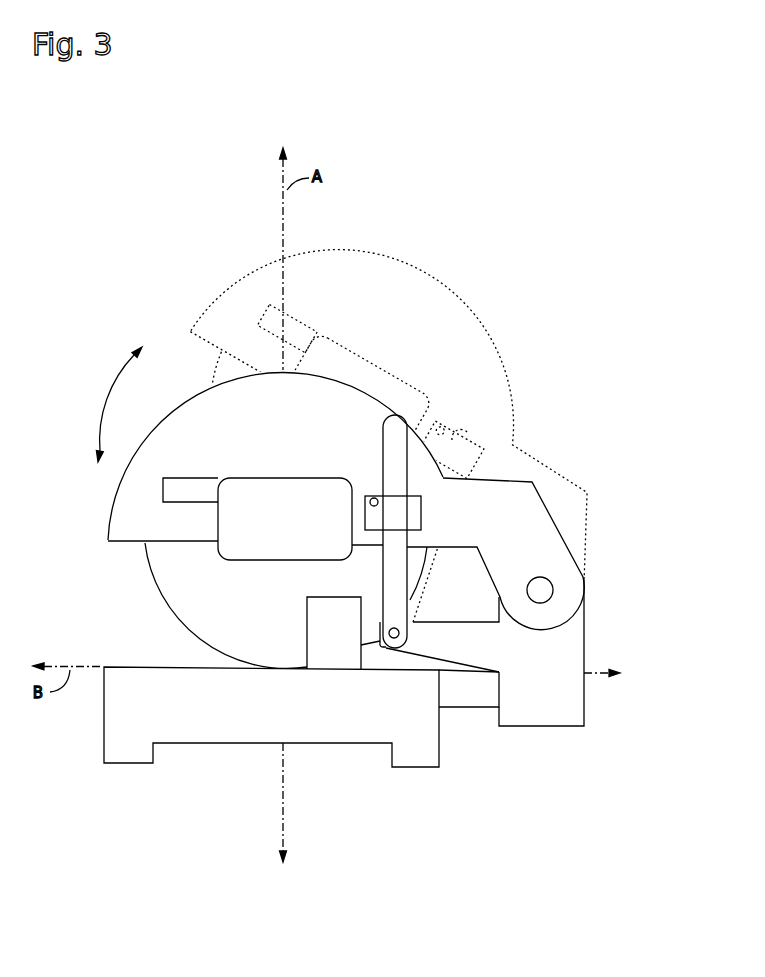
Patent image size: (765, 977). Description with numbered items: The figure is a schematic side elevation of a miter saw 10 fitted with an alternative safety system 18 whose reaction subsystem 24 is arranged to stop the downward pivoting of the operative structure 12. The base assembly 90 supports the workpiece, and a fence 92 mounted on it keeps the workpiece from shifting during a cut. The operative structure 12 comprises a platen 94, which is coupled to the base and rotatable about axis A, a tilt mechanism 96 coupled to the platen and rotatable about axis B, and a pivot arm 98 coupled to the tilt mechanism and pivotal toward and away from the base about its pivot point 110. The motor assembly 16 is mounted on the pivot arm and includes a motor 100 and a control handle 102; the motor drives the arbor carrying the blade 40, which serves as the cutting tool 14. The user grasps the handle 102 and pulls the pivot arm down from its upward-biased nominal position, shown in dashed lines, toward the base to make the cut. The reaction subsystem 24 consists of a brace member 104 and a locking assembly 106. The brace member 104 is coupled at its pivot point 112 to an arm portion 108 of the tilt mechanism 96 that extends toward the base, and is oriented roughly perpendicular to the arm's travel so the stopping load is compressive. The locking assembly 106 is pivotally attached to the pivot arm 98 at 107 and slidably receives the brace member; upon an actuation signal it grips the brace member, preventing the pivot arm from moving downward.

The miter saw 10 is at (525, 231).
The operative structure 12 is at (140, 278).
The cutting tool 14 is at (105, 603).
The motor assembly 16 is at (218, 442).
The safety system 18 is at (575, 435).
The reaction subsystem 24 is at (357, 465).
The blade 40 is at (187, 617).
The base assembly 90 is at (100, 777).
The fence 92 is at (337, 655).
The platen 94 is at (458, 698).
The tilt mechanism 96 is at (575, 645).
The pivot arm 98 is at (575, 582).
The motor 100 is at (240, 552).
The control handle 102 is at (188, 494).
The brace member 104 is at (390, 603).
The locking assembly 106 is at (415, 513).
The pivotal coupling of locking assembly 107 is at (369, 505).
The arm portion 108 is at (433, 627).
The pivot point of arm 110 is at (534, 579).
The pivot point of brace member 112 is at (400, 635).